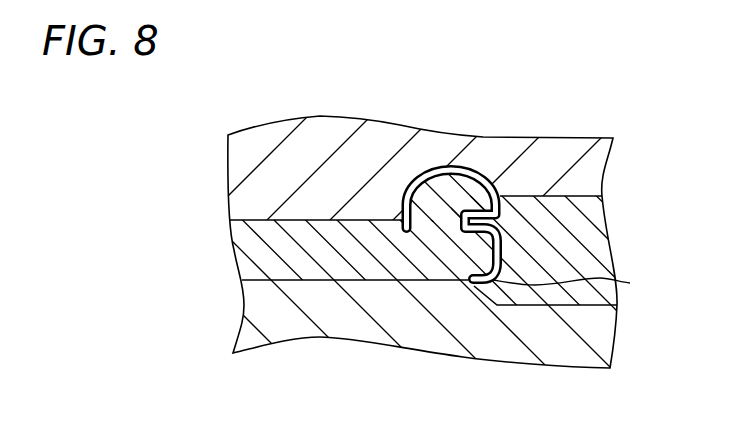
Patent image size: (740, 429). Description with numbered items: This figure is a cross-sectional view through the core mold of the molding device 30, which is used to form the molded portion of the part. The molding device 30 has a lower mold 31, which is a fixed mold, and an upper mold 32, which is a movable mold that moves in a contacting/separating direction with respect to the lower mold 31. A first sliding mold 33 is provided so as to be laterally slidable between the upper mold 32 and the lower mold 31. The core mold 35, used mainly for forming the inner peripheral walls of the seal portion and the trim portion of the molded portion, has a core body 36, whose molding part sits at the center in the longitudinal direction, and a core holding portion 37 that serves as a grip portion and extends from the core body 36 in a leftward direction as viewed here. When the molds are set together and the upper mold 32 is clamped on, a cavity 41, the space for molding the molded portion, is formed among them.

The molding device 30 is at (176, 183).
The lower mold 31 is at (356, 323).
The upper mold 32 is at (355, 116).
The first sliding mold 33 is at (597, 238).
The core mold 35 is at (220, 227).
The core body 36 is at (472, 163).
The core holding portion 37 is at (242, 263).
The cavity 41 is at (630, 283).